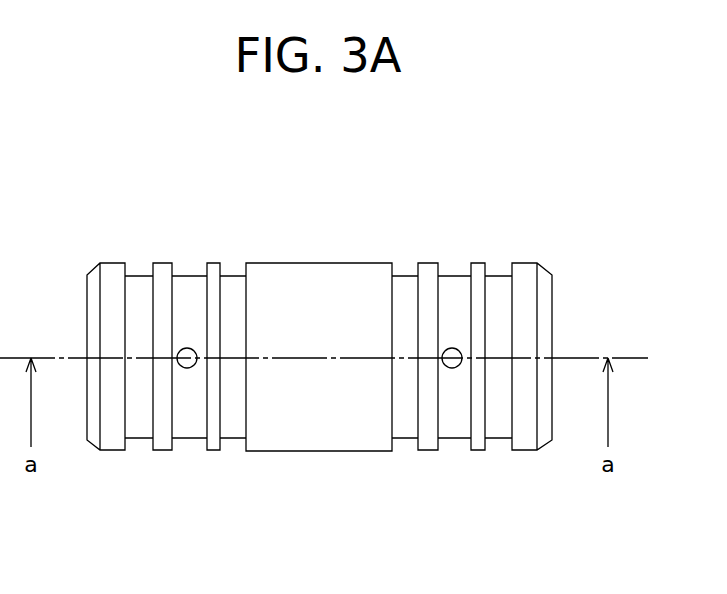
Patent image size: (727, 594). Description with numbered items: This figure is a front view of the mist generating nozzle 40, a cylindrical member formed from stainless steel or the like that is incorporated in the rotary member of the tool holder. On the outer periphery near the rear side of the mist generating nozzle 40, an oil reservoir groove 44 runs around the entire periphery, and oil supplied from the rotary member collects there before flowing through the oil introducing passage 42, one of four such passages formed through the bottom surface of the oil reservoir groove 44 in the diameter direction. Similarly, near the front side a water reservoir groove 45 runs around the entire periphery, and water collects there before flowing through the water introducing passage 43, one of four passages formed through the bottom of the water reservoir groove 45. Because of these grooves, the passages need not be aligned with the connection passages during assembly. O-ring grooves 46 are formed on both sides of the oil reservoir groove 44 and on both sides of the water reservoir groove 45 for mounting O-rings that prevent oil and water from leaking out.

The mist generating nozzle 40 is at (317, 263).
The oil introducing passage 42 is at (452, 368).
The water introducing passage 43 is at (187, 368).
The oil reservoir groove 44 is at (443, 290).
The water reservoir groove 45 is at (202, 290).
The O-ring groove 46 is at (150, 290).